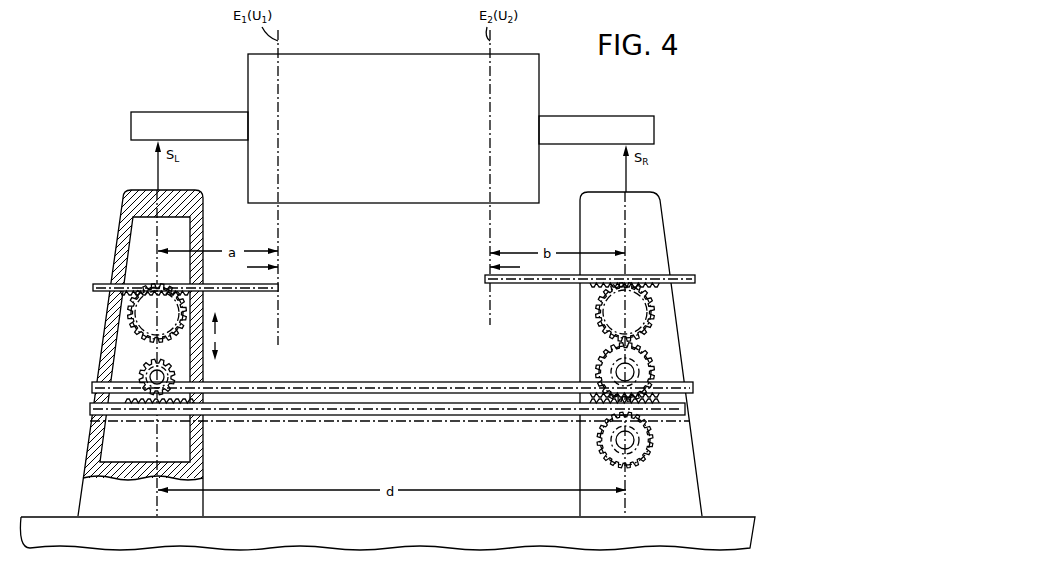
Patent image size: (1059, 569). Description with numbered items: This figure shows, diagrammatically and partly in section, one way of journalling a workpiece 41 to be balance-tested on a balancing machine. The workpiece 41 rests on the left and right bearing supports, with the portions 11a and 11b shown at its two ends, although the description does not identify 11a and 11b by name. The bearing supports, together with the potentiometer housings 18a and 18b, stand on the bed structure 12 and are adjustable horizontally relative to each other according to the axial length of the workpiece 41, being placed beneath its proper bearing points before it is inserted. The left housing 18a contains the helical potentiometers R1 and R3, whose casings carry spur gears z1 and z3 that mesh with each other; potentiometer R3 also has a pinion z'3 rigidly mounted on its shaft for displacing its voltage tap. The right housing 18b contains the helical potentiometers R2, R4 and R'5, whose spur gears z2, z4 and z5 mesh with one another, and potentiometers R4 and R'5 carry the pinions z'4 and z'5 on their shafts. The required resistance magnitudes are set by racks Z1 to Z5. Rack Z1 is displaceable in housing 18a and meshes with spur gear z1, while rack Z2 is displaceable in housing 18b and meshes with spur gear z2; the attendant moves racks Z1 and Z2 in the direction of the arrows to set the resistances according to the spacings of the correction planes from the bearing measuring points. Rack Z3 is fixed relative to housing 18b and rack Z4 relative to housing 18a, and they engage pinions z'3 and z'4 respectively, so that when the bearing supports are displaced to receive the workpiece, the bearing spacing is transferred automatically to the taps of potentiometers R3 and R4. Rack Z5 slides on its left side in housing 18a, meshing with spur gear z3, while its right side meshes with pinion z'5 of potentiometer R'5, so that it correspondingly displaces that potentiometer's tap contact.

The workpiece 41 is at (403, 54).
The left shaft end 11a is at (207, 110).
The right shaft end 11b is at (601, 113).
The potentiometer housing 18a is at (123, 196).
The potentiometer housing 18b is at (661, 202).
The bed structure 12 is at (58, 515).
The rack Z1 is at (266, 293).
The rack Z2 is at (498, 286).
The rack Z3 is at (363, 393).
The rack Z4 is at (520, 384).
The rack Z5 is at (410, 412).
The helical-type potentiometer R1 is at (143, 318).
The spur gear z1 is at (127, 310).
The helical-type potentiometer R3 is at (140, 365).
The spur gear z3 is at (142, 373).
The pinion z'3 is at (111, 385).
The helical-type potentiometer R2 is at (642, 307).
The spur gear z2 is at (595, 312).
The helical-type potentiometer R4 is at (643, 361).
The spur gear z4 is at (640, 372).
The pinion z'4 is at (664, 374).
The helical-type potentiometer R'5 is at (633, 447).
The spur gear z5 is at (649, 437).
The pinion z'5 is at (608, 457).